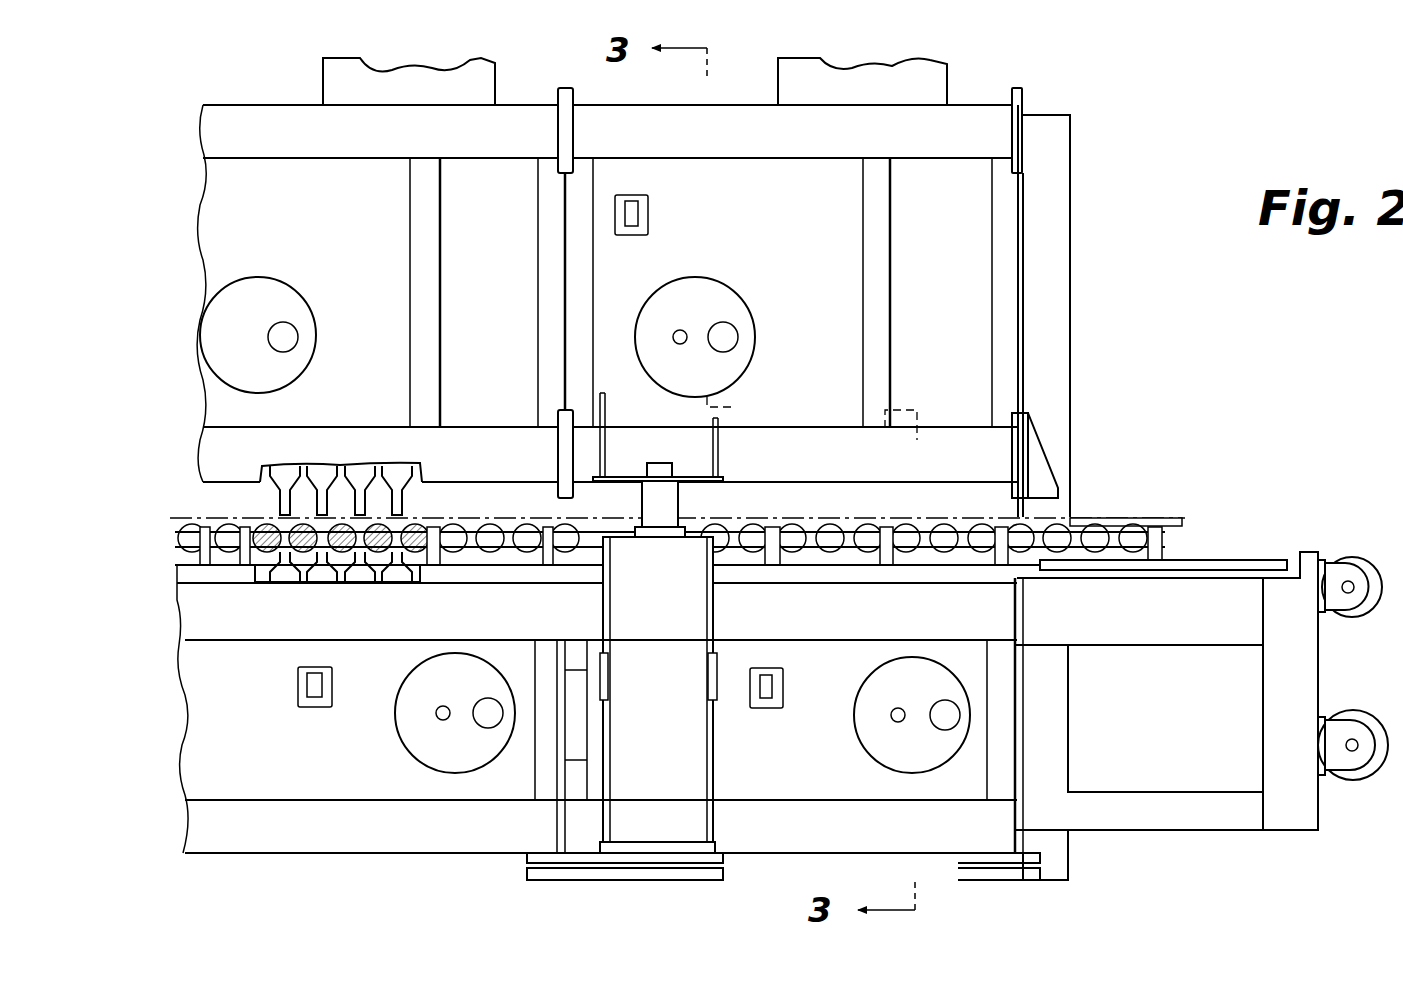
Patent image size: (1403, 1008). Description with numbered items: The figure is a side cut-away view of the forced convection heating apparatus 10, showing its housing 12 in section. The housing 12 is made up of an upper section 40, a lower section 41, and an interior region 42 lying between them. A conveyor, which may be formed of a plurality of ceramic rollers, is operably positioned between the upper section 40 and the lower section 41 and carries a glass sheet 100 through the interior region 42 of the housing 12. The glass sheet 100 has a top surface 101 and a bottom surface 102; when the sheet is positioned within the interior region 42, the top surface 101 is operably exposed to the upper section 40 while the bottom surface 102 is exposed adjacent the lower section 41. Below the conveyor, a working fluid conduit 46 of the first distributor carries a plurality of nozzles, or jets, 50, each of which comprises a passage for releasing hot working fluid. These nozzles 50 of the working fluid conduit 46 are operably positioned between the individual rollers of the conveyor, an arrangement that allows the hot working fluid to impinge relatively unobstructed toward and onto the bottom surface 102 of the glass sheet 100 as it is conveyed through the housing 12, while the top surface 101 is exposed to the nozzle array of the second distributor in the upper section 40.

The forced convection heating apparatus 10 is at (1134, 171).
The housing 12 is at (1075, 283).
The upper section 40 is at (1073, 328).
The lower section 41 is at (780, 775).
The interior region 42 is at (215, 490).
The working fluid conduit 46 is at (278, 568).
The nozzles 50 is at (398, 534).
The glass sheet 100 is at (1138, 516).
The top surface 101 is at (490, 520).
The bottom surface 102 is at (490, 575).